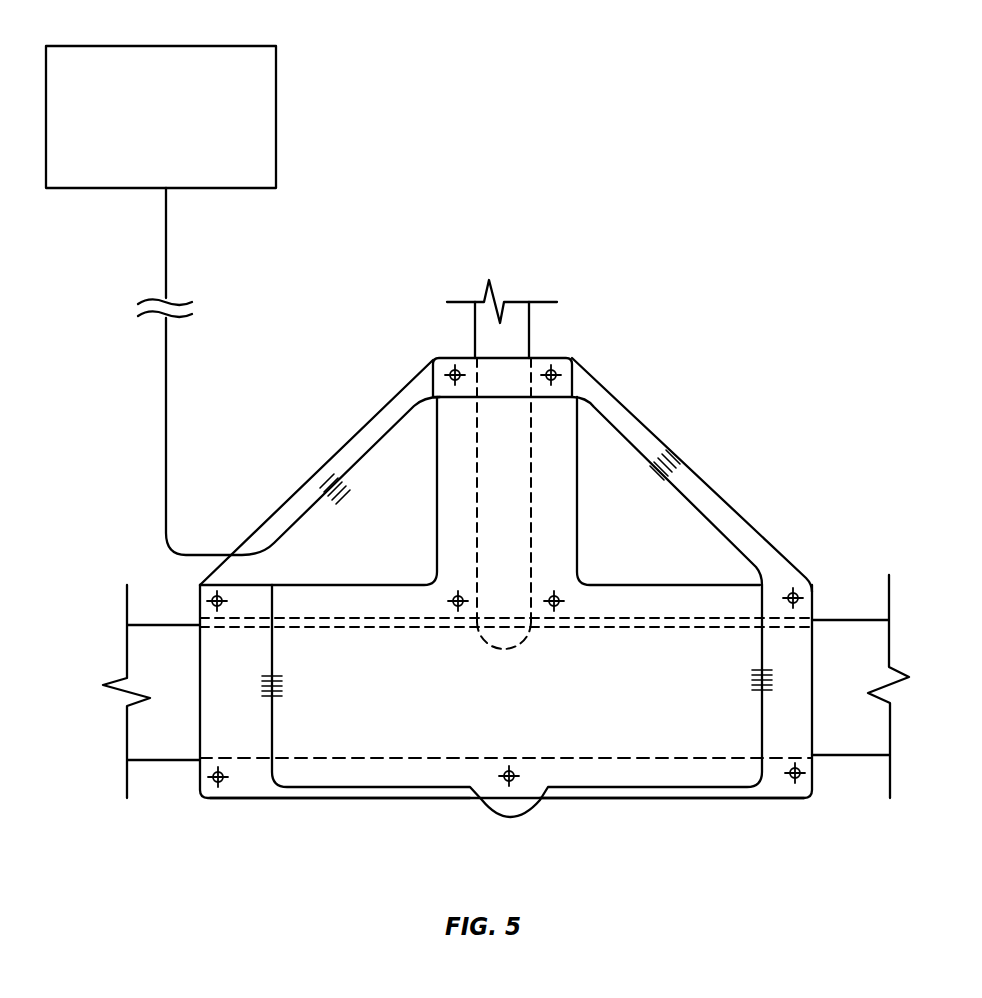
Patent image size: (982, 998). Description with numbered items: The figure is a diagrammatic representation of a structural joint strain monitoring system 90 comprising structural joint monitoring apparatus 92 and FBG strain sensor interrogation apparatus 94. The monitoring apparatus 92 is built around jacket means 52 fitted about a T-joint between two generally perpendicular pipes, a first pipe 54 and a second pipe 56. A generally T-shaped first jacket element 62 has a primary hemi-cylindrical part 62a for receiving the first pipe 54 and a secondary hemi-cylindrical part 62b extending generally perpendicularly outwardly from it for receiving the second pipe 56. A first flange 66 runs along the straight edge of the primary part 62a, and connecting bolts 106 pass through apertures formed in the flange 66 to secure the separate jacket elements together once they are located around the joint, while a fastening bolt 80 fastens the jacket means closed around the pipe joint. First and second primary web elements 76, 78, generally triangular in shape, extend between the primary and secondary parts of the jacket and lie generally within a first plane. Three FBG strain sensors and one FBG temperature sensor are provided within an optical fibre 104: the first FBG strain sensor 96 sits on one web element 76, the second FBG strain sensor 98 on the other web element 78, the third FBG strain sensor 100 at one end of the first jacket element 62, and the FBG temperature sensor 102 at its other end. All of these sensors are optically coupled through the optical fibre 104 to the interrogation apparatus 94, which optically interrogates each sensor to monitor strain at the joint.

The jacket means 52 is at (632, 798).
The first pipe 54 is at (823, 750).
The second pipe 56 is at (520, 333).
The first jacket element 62 is at (723, 743).
The primary hemi-cylindrical part 62a is at (358, 798).
The secondary hemi-cylindrical part 62b is at (577, 383).
The first flange 66 is at (257, 790).
The first primary web element 76 is at (278, 518).
The second primary web element 78 is at (752, 552).
The fastening bolt 80 is at (212, 600).
The structural joint strain monitoring system 90 is at (592, 154).
The structural joint monitoring apparatus 92 is at (689, 402).
The FBG strain sensor interrogation apparatus 94 is at (260, 117).
The first FBG strain sensor 96 is at (322, 467).
The second FBG strain sensor 98 is at (680, 477).
The third FBG strain sensor 100 is at (770, 668).
The FBG temperature sensor 102 is at (262, 686).
The optical fibre 104 is at (165, 414).
The connecting bolts 106 is at (223, 785).